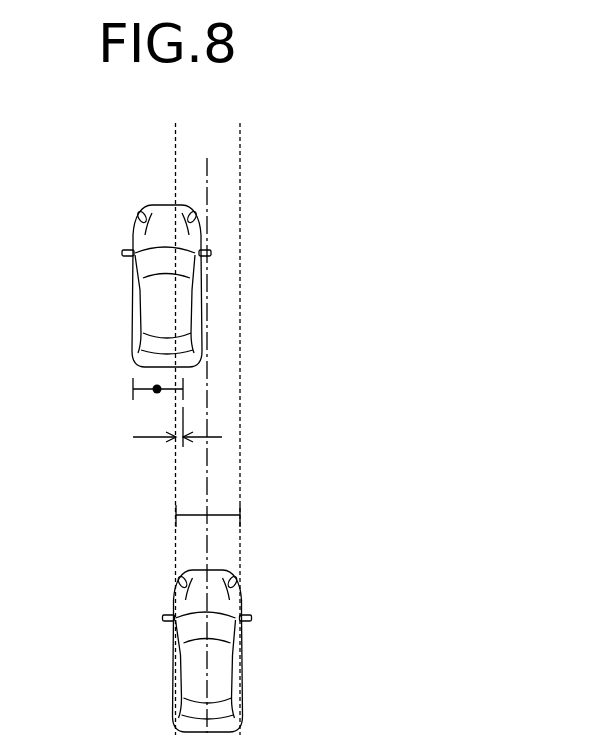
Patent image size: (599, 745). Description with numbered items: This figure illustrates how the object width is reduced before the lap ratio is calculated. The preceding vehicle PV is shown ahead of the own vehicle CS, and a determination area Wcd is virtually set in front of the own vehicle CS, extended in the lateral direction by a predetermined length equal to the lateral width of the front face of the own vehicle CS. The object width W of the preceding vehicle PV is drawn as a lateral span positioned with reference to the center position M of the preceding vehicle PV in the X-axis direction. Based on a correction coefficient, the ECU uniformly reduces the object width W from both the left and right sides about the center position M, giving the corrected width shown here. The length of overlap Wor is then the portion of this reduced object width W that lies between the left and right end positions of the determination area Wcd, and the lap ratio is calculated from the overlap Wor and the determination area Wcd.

The preceding vehicle PV is at (143, 208).
The own vehicle CS is at (173, 702).
The center position M is at (154, 389).
The object width W is at (142, 390).
The length of overlap Wor is at (177, 449).
The determination area Wcd is at (240, 137).